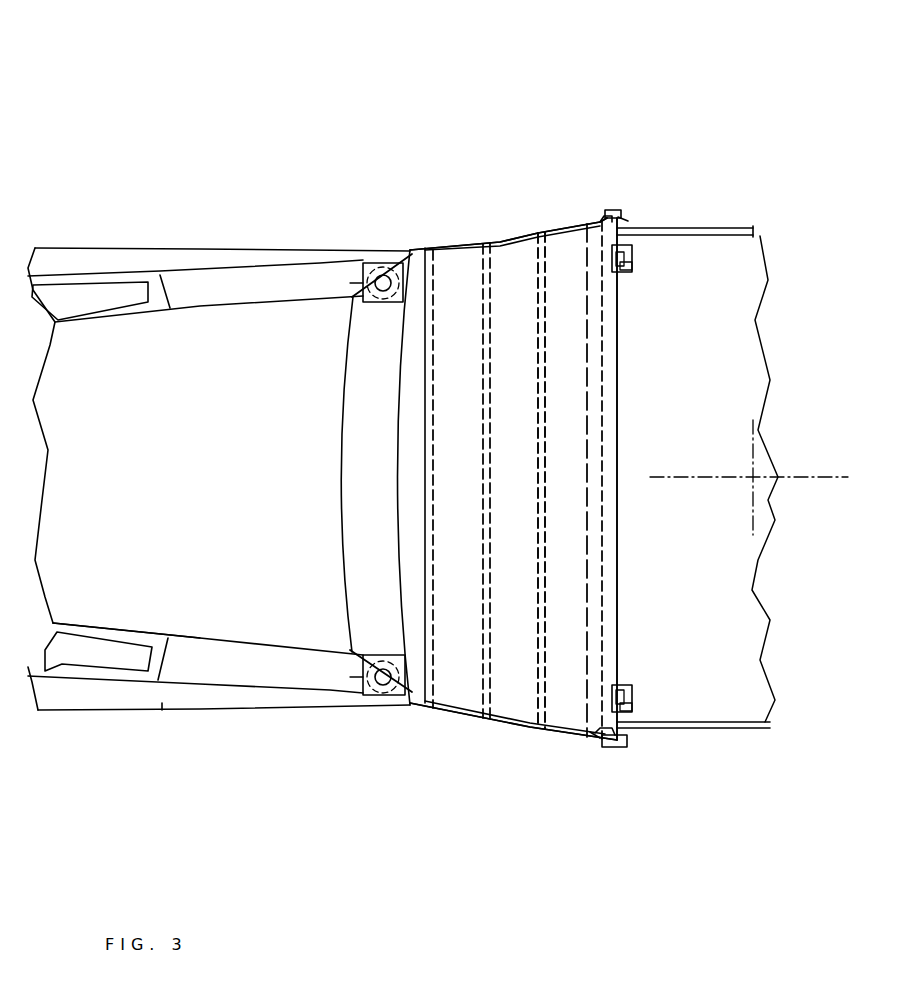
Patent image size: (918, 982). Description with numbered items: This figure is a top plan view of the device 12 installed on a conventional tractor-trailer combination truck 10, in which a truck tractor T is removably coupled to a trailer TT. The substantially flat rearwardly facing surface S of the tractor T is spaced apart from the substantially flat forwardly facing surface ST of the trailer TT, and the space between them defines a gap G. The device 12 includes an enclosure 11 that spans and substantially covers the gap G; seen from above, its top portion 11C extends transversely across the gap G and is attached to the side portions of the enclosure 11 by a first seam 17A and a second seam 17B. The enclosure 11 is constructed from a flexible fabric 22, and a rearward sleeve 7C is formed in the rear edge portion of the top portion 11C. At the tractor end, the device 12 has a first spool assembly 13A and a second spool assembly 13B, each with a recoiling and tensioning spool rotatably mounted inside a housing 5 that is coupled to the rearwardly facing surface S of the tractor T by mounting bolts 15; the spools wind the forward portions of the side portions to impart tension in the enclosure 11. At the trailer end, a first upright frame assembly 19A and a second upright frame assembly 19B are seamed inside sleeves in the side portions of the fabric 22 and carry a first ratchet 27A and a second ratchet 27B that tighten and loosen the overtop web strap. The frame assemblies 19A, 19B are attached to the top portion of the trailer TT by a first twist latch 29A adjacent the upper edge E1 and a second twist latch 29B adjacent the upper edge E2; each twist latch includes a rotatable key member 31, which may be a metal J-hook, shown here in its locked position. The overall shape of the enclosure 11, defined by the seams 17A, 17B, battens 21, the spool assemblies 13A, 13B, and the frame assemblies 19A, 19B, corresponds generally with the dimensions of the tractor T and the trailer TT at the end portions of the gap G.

The tractor-trailer combination truck 10 is at (162, 705).
The truck tractor T is at (117, 712).
The trailer TT is at (762, 600).
The upper edge of the first side portion of the trailer E1 is at (705, 728).
The upper edge of the second side portion of the trailer E2 is at (706, 228).
The gap G is at (445, 88).
The device 12 is at (405, 108).
The enclosure 11 is at (513, 725).
The battens 21 is at (425, 493).
The fabric 22 is at (563, 440).
The top portion 11C is at (567, 487).
The rearward sleeve 7C is at (600, 548).
The forwardly facing surface ST is at (588, 347).
The rearwardly facing surface S is at (343, 455).
The second seam 17B is at (470, 244).
The first seam 17A is at (473, 717).
The second spool assembly 13B is at (370, 262).
The first spool assembly 13A is at (375, 698).
The mounting bolts 15 is at (370, 268).
The housing 5 is at (383, 298).
The second twist latch 29B is at (632, 250).
The first twist latch 29A is at (633, 693).
The second ratchet 27B is at (620, 212).
The first ratchet 27A is at (622, 747).
The second upright frame assembly 19B is at (604, 212).
The first upright frame assembly 19A is at (608, 747).
The rotatable key member 31 is at (633, 258).